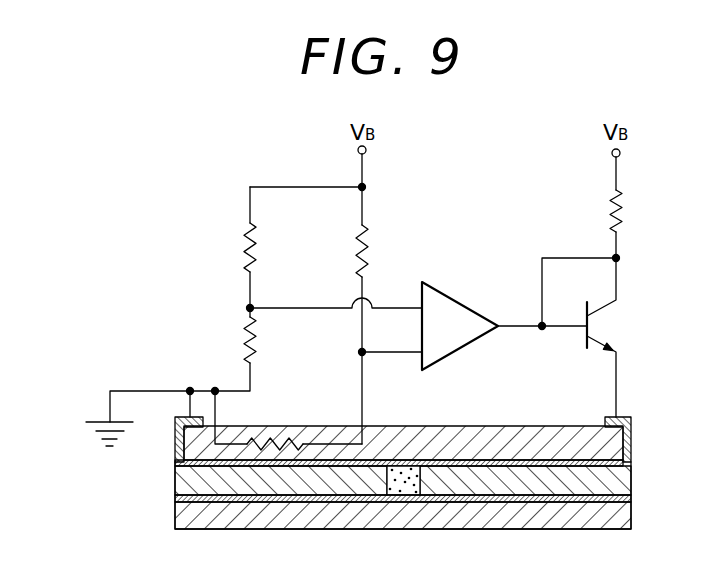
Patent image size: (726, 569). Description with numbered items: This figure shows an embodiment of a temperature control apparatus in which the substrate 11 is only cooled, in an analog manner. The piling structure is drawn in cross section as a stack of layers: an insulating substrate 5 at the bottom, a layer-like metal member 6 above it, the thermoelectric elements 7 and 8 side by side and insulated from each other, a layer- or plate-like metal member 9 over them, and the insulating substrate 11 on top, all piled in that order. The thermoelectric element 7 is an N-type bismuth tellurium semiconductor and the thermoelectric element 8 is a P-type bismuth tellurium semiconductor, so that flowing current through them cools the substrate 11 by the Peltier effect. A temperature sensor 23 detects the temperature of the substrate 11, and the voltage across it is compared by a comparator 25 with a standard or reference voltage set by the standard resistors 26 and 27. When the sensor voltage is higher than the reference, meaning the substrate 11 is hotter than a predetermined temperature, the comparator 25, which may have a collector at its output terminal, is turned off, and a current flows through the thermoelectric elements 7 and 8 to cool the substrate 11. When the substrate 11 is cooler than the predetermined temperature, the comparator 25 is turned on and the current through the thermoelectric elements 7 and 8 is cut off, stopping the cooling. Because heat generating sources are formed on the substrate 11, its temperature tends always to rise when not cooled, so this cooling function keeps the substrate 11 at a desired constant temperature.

The insulating substrate 5 is at (620, 517).
The layer-like metal member 6 is at (177, 497).
The thermoelectric element 7 is at (186, 482).
The thermoelectric element 8 is at (619, 487).
The layer- or plate-like metal member 9 is at (606, 447).
The insulating substrate 11 is at (633, 438).
The temperature sensor 23 is at (288, 434).
The comparator 25 is at (452, 297).
The standard resistor 26 is at (240, 253).
The standard resistor 27 is at (242, 343).